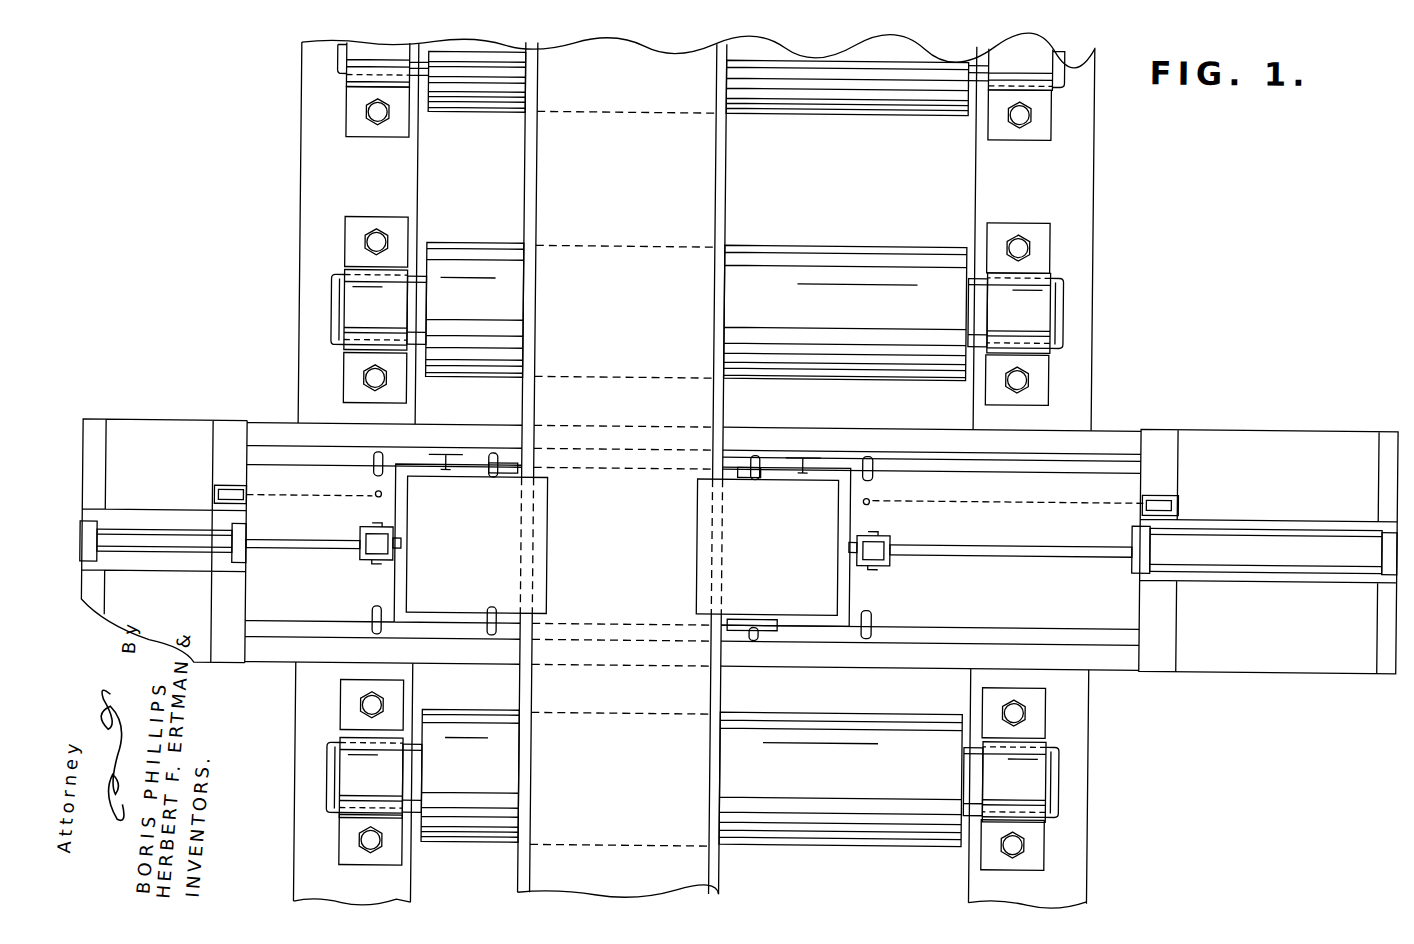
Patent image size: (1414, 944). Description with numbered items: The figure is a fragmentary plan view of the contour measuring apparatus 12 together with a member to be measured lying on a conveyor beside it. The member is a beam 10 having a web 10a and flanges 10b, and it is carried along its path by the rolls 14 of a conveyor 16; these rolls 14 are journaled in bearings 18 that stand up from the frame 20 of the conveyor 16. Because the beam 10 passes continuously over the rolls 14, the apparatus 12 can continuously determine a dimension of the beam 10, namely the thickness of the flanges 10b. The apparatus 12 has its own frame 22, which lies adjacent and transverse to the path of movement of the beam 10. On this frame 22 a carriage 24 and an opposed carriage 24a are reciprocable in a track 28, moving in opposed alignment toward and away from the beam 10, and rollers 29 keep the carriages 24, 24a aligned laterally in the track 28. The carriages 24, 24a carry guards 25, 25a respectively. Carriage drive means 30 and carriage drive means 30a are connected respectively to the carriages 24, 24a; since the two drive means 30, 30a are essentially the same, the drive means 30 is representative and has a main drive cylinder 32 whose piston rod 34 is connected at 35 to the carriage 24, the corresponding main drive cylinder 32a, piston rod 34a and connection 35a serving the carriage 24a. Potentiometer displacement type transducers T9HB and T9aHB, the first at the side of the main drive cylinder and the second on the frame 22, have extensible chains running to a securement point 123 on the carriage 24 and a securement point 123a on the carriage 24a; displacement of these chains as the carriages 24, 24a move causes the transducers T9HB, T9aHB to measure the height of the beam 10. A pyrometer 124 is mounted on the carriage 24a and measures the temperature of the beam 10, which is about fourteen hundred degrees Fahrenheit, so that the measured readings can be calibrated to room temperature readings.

The beam 10 is at (732, 184).
The web 10a is at (551, 181).
The flanges 10b is at (527, 215).
The contour measuring apparatus 12 is at (248, 362).
The rolls 14 is at (914, 113).
The conveyor 16 is at (1070, 778).
The bearings 18 is at (375, 141).
The frame 20 is at (1090, 852).
The frame 22 is at (281, 664).
The carriage 24 is at (477, 533).
The carriage 24a is at (767, 536).
The guard 25 is at (548, 542).
The guard 25a is at (697, 542).
The track 28 is at (330, 456).
The rollers 29 is at (390, 446).
The carriage drive means 30 is at (161, 562).
The carriage drive means 30a is at (1278, 583).
The main drive cylinder 32 is at (153, 532).
The main drive cylinder 32a is at (1248, 536).
The piston rod 34 is at (299, 544).
The piston rod 34a is at (1034, 556).
The connection 35 is at (380, 527).
The connection 35a is at (878, 539).
The securement point 123 is at (377, 494).
The securement point 123a is at (869, 496).
The pyrometer 124 is at (757, 619).
The potentiometer displacement type transducer T9HB is at (212, 490).
The potentiometer displacement type transducer T9aHB is at (1172, 490).